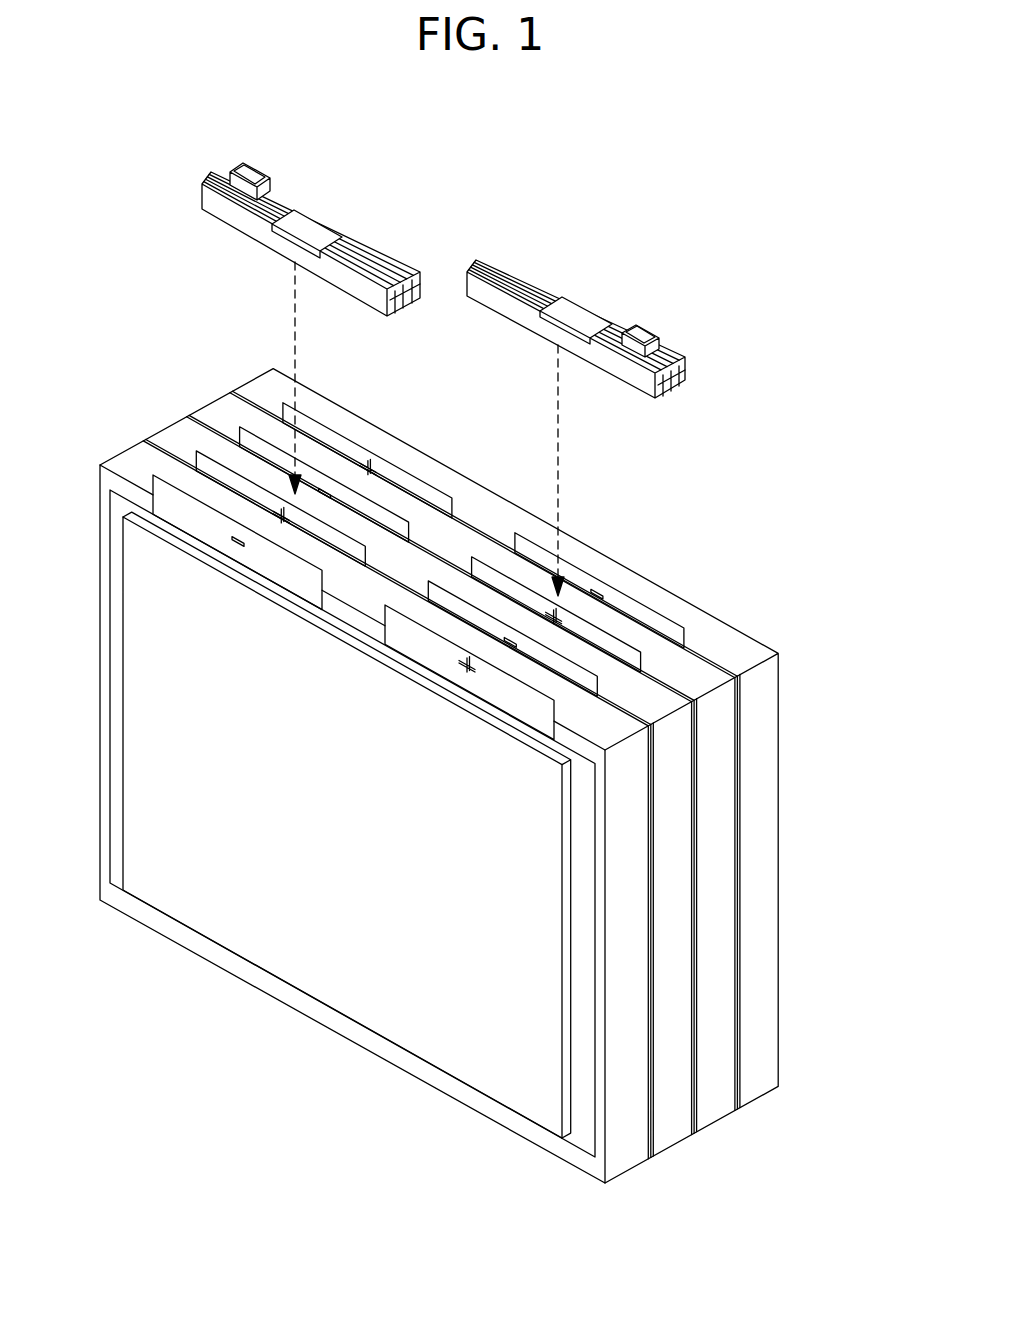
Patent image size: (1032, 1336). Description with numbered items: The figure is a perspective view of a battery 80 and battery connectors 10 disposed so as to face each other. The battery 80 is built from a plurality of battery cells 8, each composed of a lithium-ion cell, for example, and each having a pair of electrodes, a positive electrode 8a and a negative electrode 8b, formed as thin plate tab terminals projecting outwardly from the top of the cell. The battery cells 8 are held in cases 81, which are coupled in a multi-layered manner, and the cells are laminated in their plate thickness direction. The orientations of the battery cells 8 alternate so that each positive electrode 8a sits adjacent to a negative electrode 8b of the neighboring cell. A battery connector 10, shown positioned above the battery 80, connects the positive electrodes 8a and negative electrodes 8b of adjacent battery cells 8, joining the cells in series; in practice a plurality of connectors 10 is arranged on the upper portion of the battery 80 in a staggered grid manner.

The battery 80 is at (646, 553).
The battery cell 8 is at (297, 963).
The case 81 is at (620, 1170).
The positive electrode 8a is at (312, 430).
The negative electrode 8b is at (238, 442).
The battery connector 10 is at (322, 200).